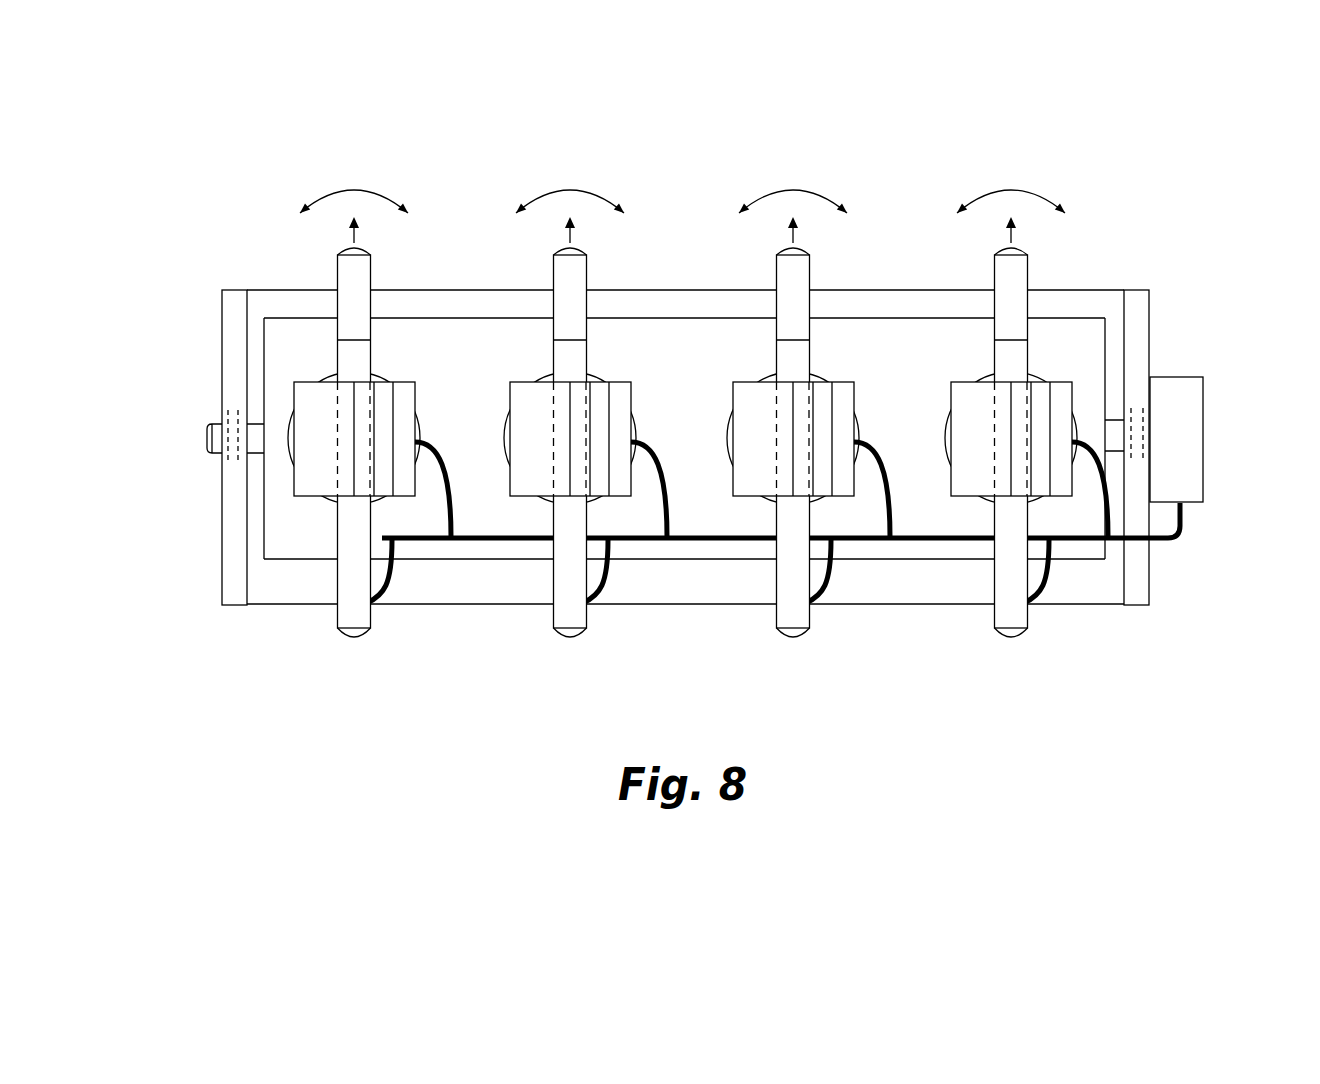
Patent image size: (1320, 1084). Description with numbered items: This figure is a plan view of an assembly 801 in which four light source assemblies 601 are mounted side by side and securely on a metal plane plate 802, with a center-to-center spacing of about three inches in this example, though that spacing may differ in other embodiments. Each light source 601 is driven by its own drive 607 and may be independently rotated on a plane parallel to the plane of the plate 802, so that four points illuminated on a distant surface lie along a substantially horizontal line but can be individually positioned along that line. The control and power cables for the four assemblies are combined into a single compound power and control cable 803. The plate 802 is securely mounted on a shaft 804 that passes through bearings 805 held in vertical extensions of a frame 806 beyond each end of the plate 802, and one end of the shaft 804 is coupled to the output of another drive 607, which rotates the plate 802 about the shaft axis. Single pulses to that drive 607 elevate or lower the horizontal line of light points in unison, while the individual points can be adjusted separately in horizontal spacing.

The light source assembly 601 is at (400, 366).
The drive 607 is at (1197, 420).
The assembly 801 is at (1088, 278).
The metal plane plate 802 is at (957, 560).
The compound power and control cable 803 is at (725, 541).
The shaft 804 is at (200, 437).
The bearings 805 is at (231, 408).
The frame 806 is at (234, 602).